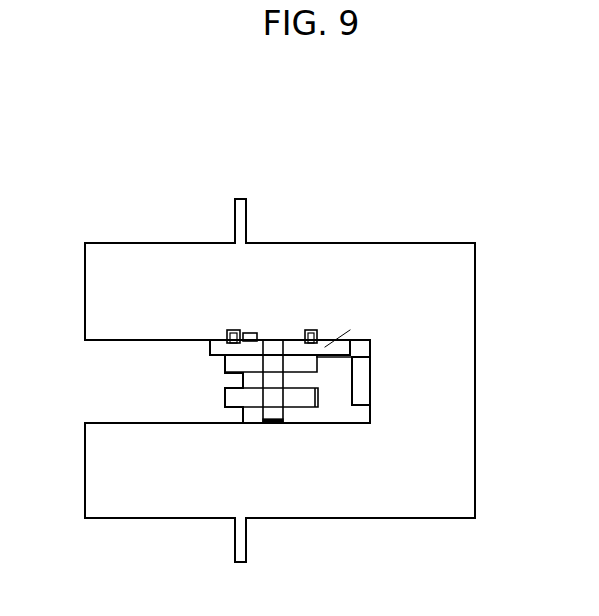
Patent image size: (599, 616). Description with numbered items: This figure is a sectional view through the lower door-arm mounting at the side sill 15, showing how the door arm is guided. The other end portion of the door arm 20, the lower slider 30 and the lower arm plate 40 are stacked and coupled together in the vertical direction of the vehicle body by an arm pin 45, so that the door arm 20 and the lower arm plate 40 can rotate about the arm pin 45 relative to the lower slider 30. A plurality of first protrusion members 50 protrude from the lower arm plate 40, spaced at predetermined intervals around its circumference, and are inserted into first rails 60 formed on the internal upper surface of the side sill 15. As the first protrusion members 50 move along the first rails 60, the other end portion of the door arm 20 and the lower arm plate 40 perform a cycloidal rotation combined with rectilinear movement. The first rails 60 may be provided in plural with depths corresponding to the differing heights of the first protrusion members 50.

The side sill 15 is at (461, 497).
The door arm 20 is at (228, 367).
The lower slider 30 is at (330, 382).
The lower arm plate 40 is at (347, 320).
The arm pin 45 is at (264, 345).
The first protrusion member 50 is at (325, 347).
The first rail 60 is at (305, 335).